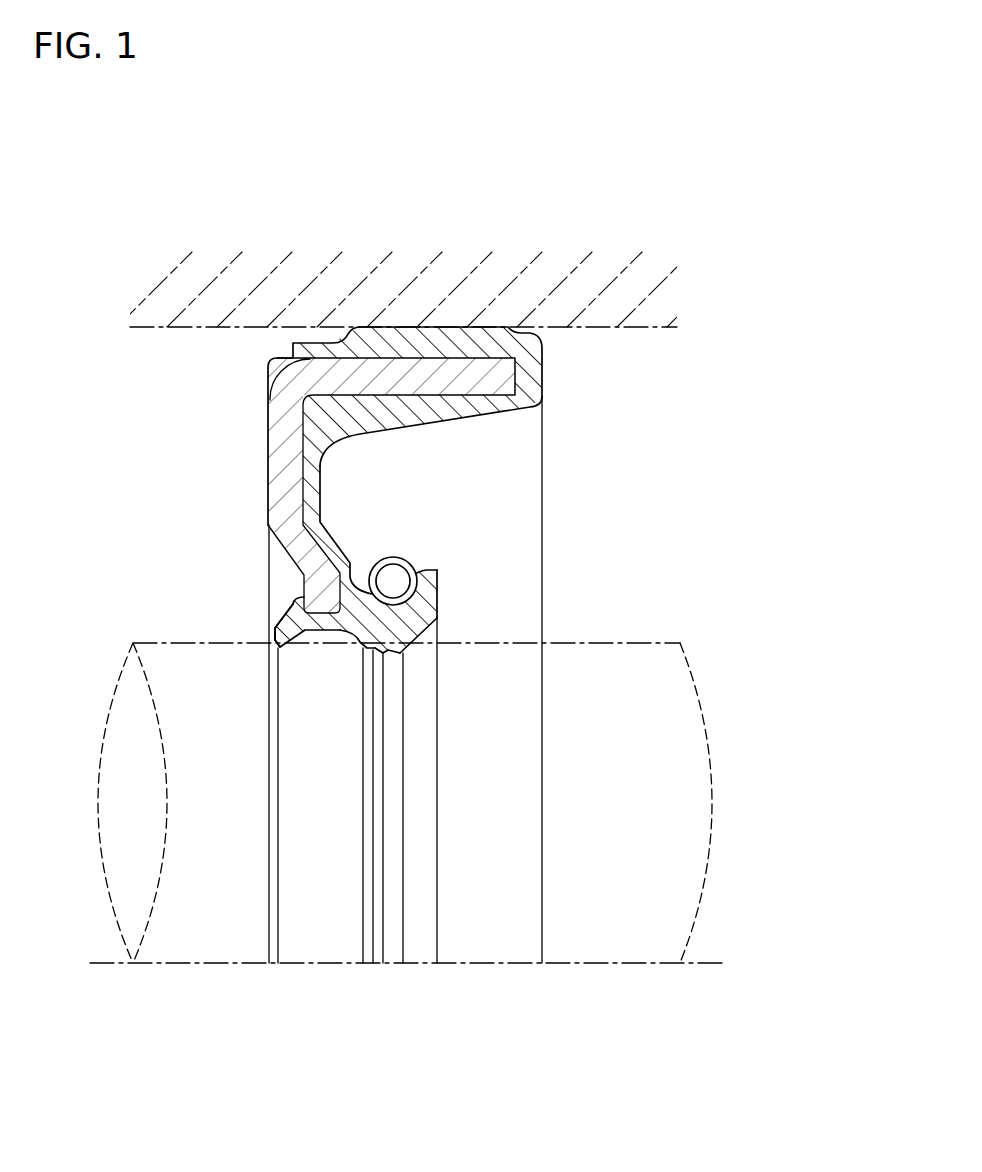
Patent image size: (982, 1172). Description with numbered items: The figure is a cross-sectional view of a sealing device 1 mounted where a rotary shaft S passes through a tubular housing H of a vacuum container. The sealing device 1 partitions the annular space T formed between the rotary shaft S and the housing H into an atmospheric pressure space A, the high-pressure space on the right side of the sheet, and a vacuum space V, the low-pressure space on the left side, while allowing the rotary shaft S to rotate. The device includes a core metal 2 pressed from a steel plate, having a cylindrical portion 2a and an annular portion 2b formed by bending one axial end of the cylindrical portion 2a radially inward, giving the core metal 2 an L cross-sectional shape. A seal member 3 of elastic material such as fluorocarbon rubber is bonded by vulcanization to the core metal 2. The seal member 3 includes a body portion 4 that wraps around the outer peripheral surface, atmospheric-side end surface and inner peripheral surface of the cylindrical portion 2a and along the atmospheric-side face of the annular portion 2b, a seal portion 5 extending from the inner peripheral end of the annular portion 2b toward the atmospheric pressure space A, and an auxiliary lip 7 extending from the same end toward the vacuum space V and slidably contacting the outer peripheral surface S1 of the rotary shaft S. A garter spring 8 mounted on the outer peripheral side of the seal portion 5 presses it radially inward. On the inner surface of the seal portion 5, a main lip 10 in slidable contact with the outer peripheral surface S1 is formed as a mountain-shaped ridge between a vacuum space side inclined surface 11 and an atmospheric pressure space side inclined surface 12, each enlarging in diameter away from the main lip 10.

The sealing device 1 is at (563, 237).
The core metal 2 is at (381, 353).
The cylindrical portion 2a is at (460, 373).
The annular portion 2b is at (365, 423).
The seal member 3 is at (397, 429).
The body portion 4 is at (487, 405).
The seal portion 5 is at (439, 578).
The auxiliary lip 7 is at (283, 628).
The garter spring 8 is at (393, 557).
The main lip 10 is at (402, 657).
The vacuum space side inclined surface 11 is at (367, 653).
The atmospheric pressure space side inclined surface 12 is at (440, 635).
The housing H is at (213, 300).
The vacuum space V is at (162, 367).
The rotary shaft S is at (116, 680).
The outer peripheral surface S1 is at (158, 643).
The atmospheric pressure space A is at (642, 375).
The annular space T is at (147, 437).